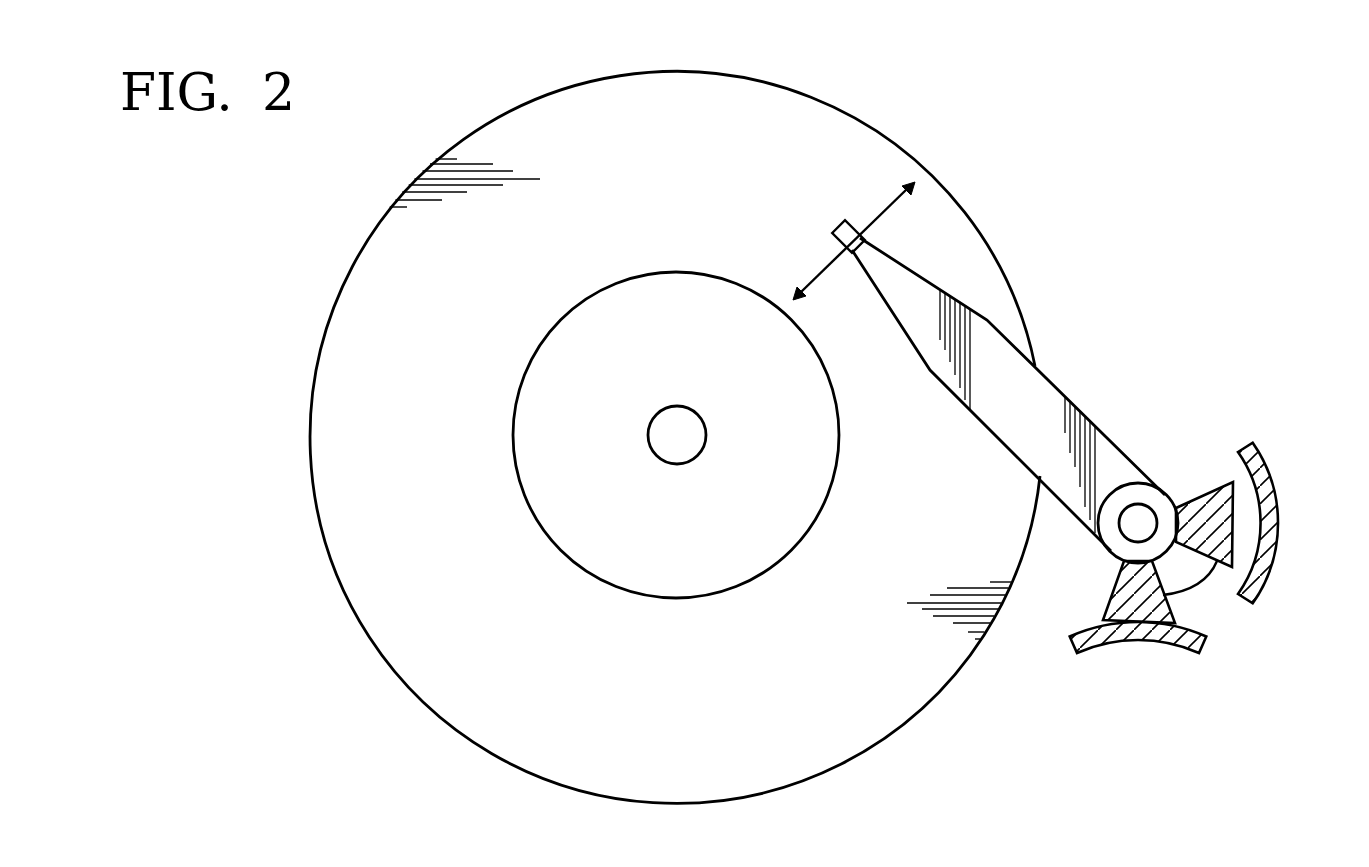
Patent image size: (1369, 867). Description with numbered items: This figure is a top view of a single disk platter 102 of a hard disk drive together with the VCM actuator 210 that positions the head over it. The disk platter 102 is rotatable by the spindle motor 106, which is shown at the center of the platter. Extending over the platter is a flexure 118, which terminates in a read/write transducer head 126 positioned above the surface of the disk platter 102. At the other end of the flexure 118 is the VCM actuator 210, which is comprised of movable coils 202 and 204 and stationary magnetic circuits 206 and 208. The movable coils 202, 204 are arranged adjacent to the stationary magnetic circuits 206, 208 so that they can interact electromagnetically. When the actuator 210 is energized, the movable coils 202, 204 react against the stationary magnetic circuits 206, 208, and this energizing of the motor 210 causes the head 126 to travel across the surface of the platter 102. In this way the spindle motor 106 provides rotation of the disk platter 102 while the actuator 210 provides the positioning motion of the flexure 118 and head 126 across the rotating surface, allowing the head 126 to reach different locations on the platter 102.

The disk platter 102 is at (414, 697).
The spindle motor 106 is at (677, 454).
The flexure 118 is at (1084, 419).
The read/write transducer head 126 is at (839, 227).
The movable coil 202 is at (1188, 502).
The movable coil 204 is at (1112, 603).
The stationary magnetic circuit 206 is at (1145, 643).
The stationary magnetic circuit 208 is at (1267, 521).
The VCM actuator 210 is at (1040, 685).